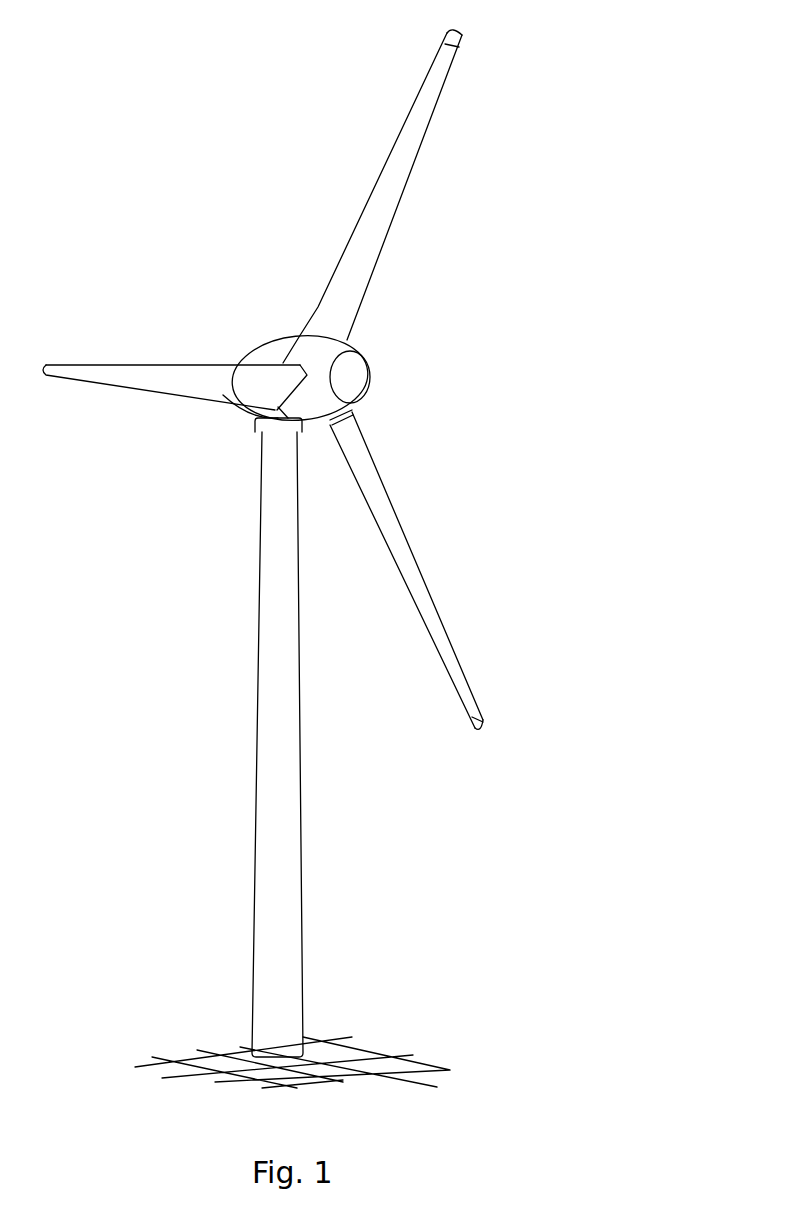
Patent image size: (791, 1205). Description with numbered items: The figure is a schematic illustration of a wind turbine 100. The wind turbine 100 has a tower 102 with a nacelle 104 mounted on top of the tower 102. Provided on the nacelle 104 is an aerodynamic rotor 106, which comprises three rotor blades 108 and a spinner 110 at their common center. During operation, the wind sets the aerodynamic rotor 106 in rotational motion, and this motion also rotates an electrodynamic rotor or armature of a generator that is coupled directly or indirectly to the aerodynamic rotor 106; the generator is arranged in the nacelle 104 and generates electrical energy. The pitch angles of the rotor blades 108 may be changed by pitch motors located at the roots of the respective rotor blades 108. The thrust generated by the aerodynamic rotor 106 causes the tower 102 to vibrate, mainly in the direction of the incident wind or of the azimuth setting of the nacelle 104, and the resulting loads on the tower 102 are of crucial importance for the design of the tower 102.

The wind turbine 100 is at (212, 500).
The tower 102 is at (285, 838).
The nacelle 104 is at (270, 353).
The aerodynamic rotor 106 is at (441, 300).
The rotor blades 108 is at (412, 148).
The spinner 110 is at (353, 378).